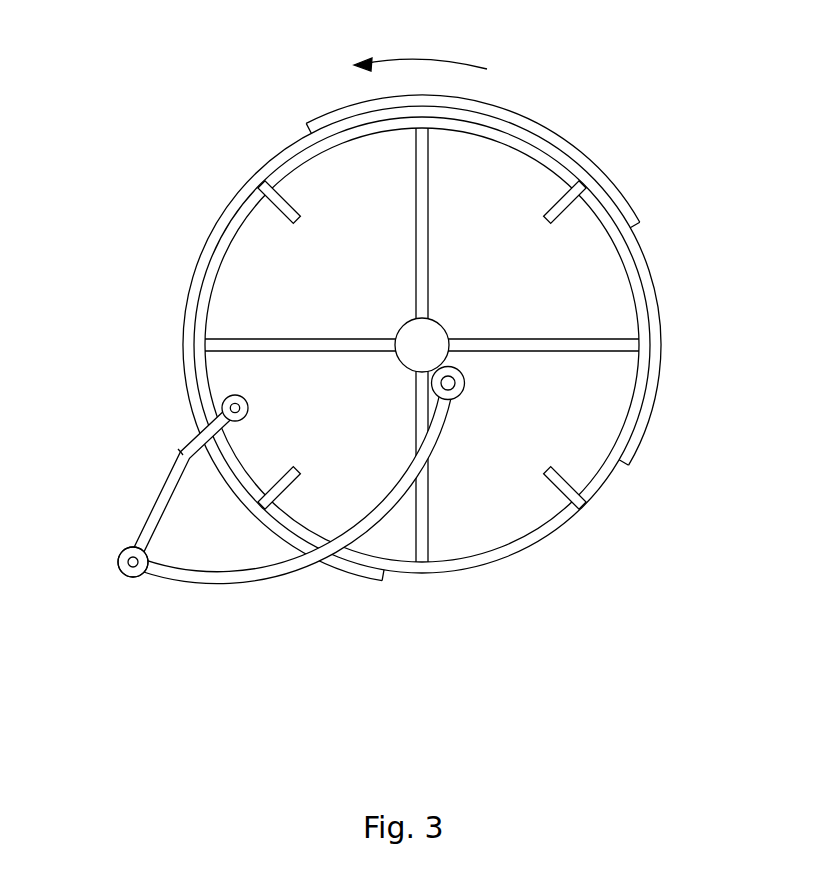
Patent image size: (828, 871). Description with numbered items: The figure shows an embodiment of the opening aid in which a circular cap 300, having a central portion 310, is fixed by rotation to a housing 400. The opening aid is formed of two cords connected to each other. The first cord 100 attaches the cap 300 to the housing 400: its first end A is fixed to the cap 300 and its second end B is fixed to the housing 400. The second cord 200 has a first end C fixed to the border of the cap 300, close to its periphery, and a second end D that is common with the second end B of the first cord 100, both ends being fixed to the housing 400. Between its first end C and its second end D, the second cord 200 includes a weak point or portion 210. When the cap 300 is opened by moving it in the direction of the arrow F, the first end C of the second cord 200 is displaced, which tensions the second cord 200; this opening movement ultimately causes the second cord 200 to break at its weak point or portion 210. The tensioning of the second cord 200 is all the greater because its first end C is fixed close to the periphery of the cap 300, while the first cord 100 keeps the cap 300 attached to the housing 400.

The first cord 100 is at (233, 582).
The second cord 200 is at (169, 494).
The weak point or portion 210 is at (181, 460).
The cap 300 is at (328, 287).
The central portion 310 is at (424, 342).
The housing 400 is at (119, 277).
The first end A is at (456, 384).
The second end B is at (131, 577).
The first end C is at (246, 398).
The second end D is at (124, 551).
The arrow F is at (420, 47).